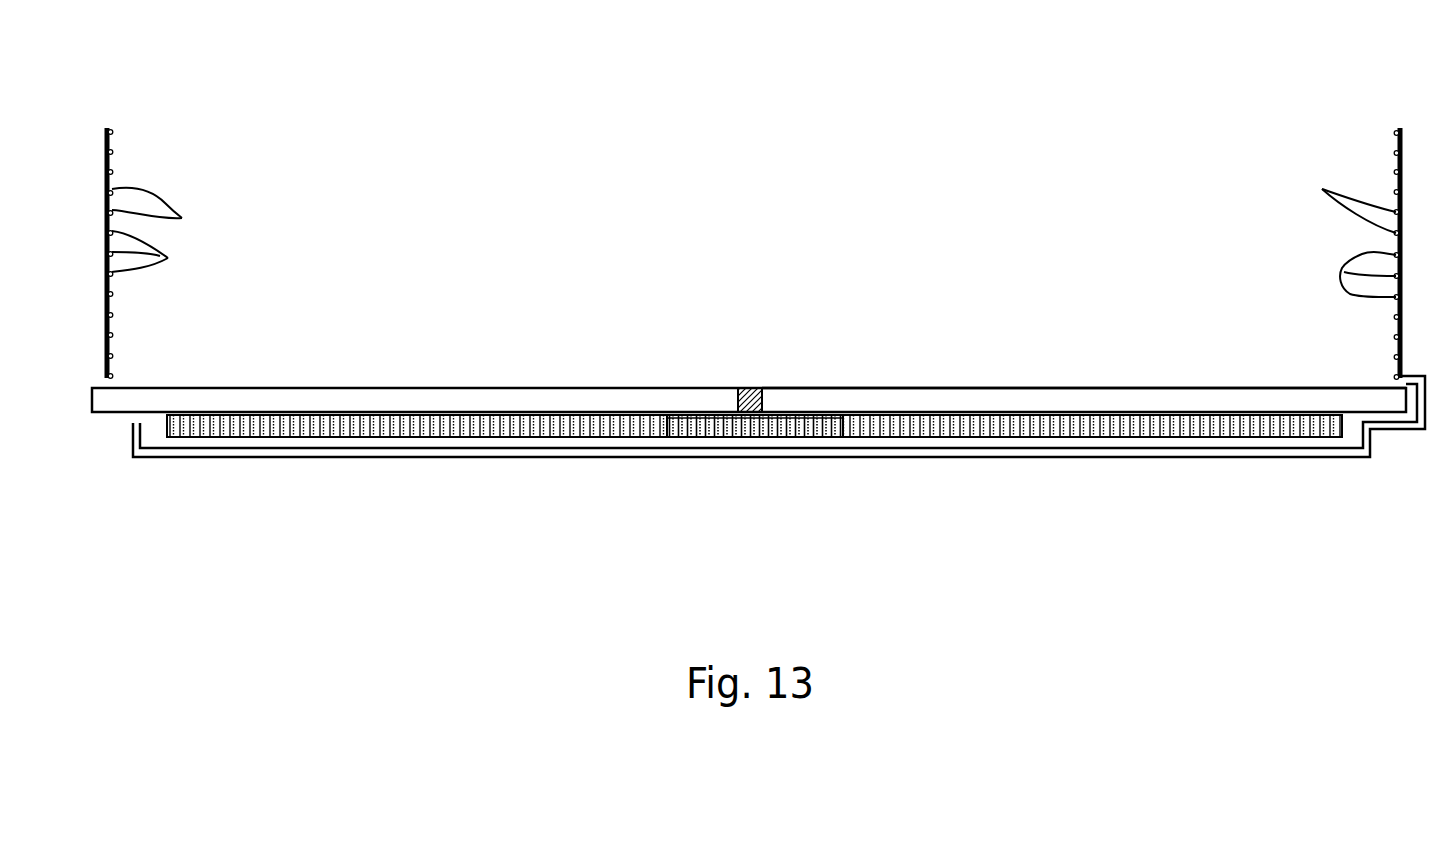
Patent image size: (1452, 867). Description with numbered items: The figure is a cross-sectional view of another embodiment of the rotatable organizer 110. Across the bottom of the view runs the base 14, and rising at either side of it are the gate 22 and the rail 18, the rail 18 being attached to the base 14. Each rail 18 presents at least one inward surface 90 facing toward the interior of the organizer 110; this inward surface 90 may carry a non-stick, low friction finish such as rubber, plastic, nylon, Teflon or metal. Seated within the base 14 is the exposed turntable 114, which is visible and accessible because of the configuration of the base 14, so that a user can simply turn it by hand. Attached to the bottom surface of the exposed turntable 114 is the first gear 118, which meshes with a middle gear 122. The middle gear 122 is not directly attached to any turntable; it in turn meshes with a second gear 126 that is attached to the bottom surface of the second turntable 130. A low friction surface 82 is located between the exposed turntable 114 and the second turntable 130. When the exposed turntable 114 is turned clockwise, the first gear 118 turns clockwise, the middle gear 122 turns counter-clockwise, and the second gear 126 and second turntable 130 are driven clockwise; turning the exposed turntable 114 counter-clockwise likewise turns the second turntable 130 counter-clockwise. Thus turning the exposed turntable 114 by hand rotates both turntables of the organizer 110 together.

The rotatable organizer 110 is at (424, 94).
The gate 22 is at (112, 172).
The rail 18 is at (1396, 172).
The inward surface 90 is at (754, 232).
The exposed turntable 114 is at (171, 396).
The low friction surface 82 is at (750, 388).
The second turntable 130 is at (1140, 398).
The first gear 118 is at (283, 428).
The middle gear 122 is at (707, 437).
The second gear 126 is at (1217, 420).
The base 14 is at (1405, 430).